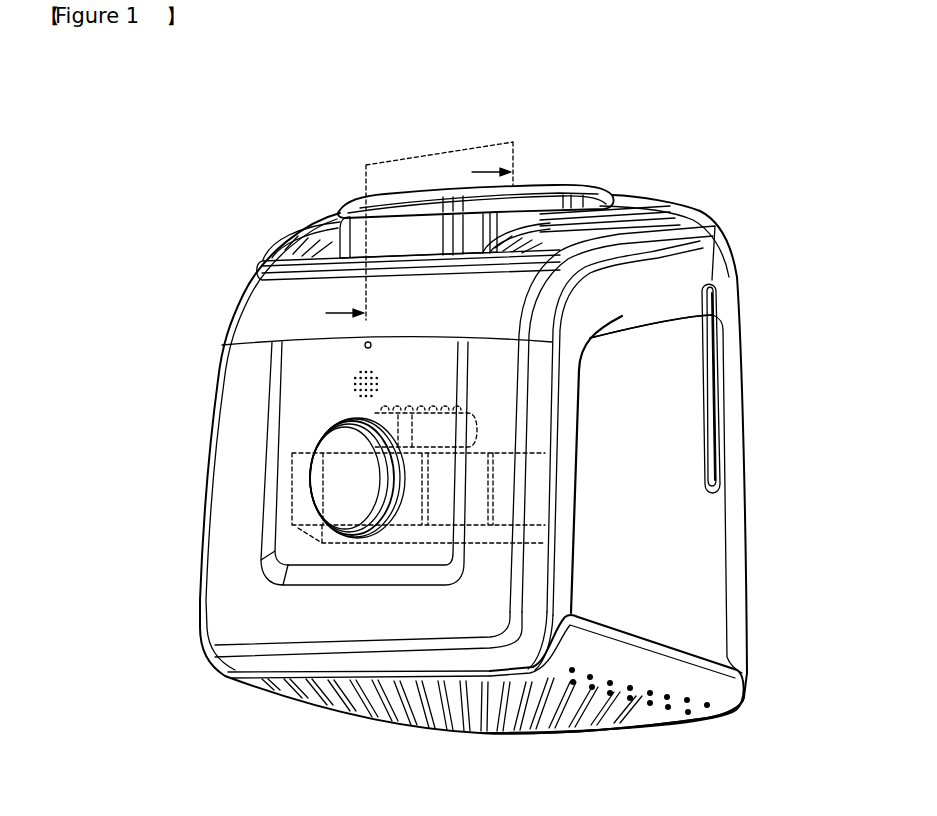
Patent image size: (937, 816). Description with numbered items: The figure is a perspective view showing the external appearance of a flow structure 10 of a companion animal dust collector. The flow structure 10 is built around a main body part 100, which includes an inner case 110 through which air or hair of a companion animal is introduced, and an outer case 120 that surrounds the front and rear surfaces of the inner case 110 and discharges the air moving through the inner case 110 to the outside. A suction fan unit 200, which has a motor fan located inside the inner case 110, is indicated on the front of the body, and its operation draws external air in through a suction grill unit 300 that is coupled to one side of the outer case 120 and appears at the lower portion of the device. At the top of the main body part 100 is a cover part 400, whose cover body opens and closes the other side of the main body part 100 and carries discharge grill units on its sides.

The flow structure of a companion animal dust collector 10 is at (217, 98).
The main body part 100 is at (840, 340).
The inner case 110 is at (498, 420).
The outer case 120 is at (730, 348).
The suction fan unit 200 is at (301, 490).
The suction grill unit 300 is at (703, 679).
The cover part 400 is at (636, 206).